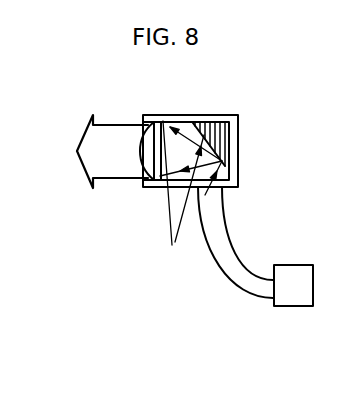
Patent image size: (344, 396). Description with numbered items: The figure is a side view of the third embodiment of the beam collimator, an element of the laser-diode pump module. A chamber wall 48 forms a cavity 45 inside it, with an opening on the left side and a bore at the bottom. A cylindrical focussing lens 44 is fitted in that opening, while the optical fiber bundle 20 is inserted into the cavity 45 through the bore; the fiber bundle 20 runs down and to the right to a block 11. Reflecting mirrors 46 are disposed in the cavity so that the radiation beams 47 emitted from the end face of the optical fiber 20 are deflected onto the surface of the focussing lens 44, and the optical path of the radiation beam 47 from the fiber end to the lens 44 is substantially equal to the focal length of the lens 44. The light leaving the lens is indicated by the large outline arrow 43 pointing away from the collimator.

The light source 11 is at (295, 296).
The optical fiber bundle 20 is at (227, 248).
The emitted light arrow 43 is at (87, 157).
The cylindrical focussing lens 44 is at (141, 166).
The cavity 45 is at (192, 125).
The reflecting mirrors 46 is at (226, 128).
The radiation beams 47 is at (190, 196).
The chamber wall 48 is at (203, 117).